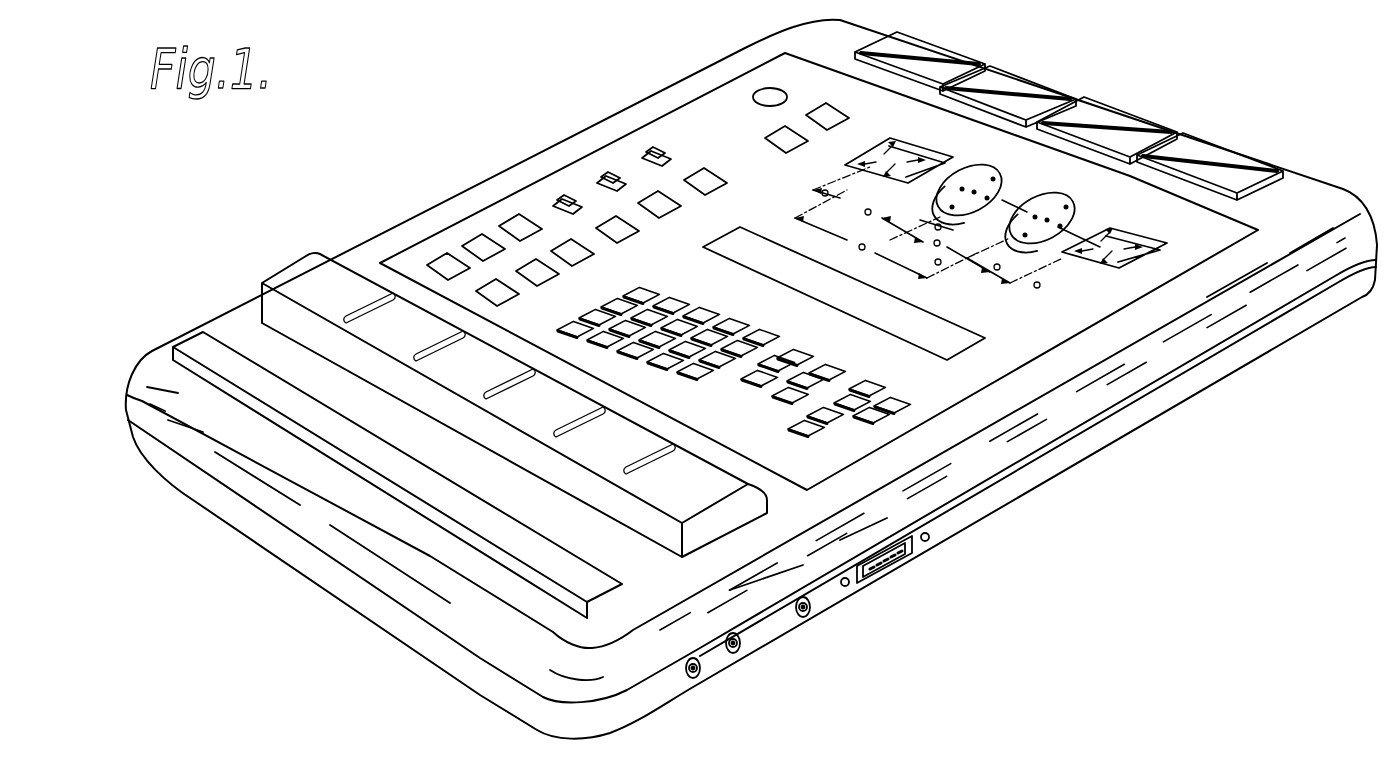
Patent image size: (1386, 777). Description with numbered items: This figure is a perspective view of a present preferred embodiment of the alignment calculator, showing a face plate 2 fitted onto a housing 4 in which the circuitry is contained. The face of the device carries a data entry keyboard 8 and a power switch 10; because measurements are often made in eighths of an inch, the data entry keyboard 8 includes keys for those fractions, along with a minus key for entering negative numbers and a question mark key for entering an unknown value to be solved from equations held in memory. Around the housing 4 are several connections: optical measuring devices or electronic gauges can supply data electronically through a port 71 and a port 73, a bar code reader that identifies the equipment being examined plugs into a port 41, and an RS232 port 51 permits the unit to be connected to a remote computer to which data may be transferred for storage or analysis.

The face plate 2 is at (698, 132).
The housing 4 is at (468, 195).
The data entry keyboard 8 is at (700, 310).
The power switch 10 is at (770, 91).
The port 41 is at (703, 677).
The RS232 port 51 is at (893, 567).
The port 71 is at (812, 613).
The port 73 is at (743, 653).